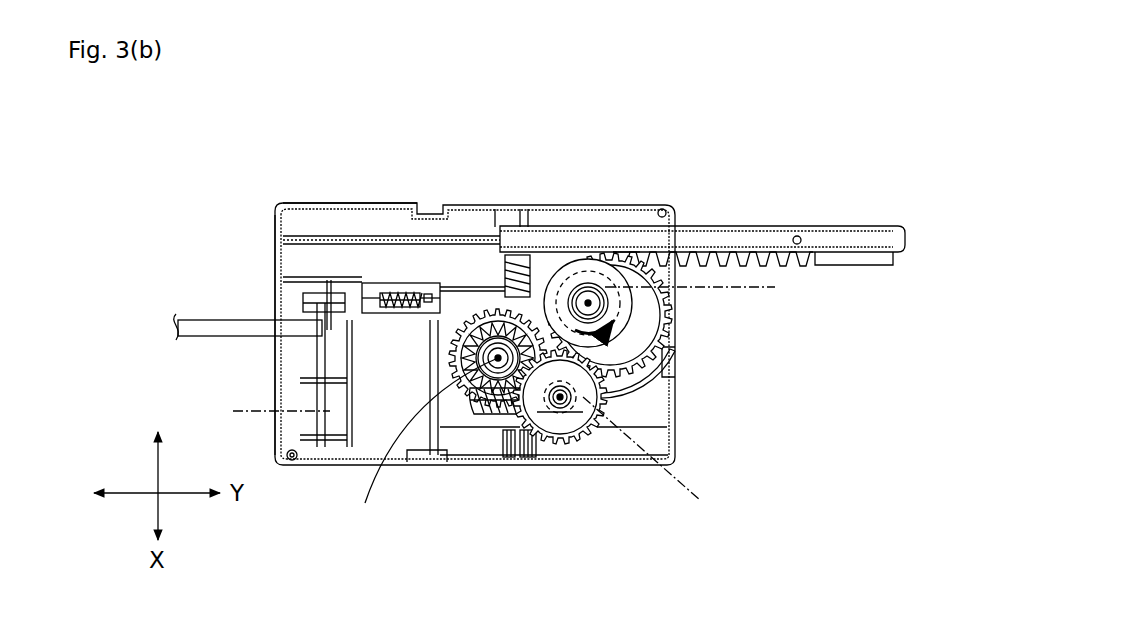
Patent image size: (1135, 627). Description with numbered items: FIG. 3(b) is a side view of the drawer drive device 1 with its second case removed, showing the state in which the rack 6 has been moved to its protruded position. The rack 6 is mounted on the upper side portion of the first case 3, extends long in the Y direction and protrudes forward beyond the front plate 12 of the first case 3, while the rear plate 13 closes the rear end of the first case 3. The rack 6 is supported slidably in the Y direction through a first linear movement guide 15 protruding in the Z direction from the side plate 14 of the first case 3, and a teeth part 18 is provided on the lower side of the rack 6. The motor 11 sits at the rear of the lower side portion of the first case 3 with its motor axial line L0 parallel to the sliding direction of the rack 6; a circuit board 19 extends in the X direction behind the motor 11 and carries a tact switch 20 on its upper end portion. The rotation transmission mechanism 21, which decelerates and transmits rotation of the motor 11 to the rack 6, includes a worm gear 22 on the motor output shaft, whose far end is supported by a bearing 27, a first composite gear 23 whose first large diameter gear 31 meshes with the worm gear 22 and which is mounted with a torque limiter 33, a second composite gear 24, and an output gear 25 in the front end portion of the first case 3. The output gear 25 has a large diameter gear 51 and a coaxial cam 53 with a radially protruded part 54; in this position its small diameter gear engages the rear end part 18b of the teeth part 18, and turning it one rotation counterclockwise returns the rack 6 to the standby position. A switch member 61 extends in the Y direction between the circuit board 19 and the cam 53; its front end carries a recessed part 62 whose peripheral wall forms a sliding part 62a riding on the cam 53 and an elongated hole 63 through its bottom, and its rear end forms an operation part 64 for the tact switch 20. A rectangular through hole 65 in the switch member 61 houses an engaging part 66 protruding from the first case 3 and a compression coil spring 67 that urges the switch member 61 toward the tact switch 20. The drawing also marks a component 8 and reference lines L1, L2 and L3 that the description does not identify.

The drawer drive device 1 is at (781, 87).
The first case 3 is at (465, 203).
The rack 6 is at (645, 256).
The shaft 8 is at (190, 337).
The motor 11 is at (360, 407).
The front plate 12 is at (677, 350).
The rear plate 13 is at (280, 265).
The side plate 14 is at (483, 222).
The first linear movement guide 15 is at (392, 240).
The teeth part 18 is at (697, 256).
The rear end part 18b is at (585, 248).
The circuit board 19 is at (350, 368).
The tact switch 20 is at (335, 303).
The rotation transmission mechanism 21 is at (636, 404).
The worm gear 22 is at (470, 435).
The first composite gear 23 is at (453, 400).
The second composite gear 24 is at (573, 427).
The output gear 25 is at (650, 360).
The bearing 27 is at (515, 440).
The first large diameter gear 31 is at (500, 398).
The torque limiter 33 is at (473, 392).
The large diameter gear 51 is at (636, 371).
The cam 53 is at (621, 297).
The protruded part 54 is at (624, 321).
The switch member 61 is at (507, 290).
The recessed part 62 is at (592, 292).
The sliding part 62a is at (570, 262).
The elongated hole 63 is at (603, 292).
The operation part 64 is at (372, 290).
The through hole 65 is at (414, 279).
The engaging part 66 is at (385, 287).
The compression coil spring 67 is at (398, 291).
The motor axial line L0 is at (250, 410).
The axis L1 is at (422, 441).
The axis L2 is at (657, 458).
The axis L3 is at (704, 285).